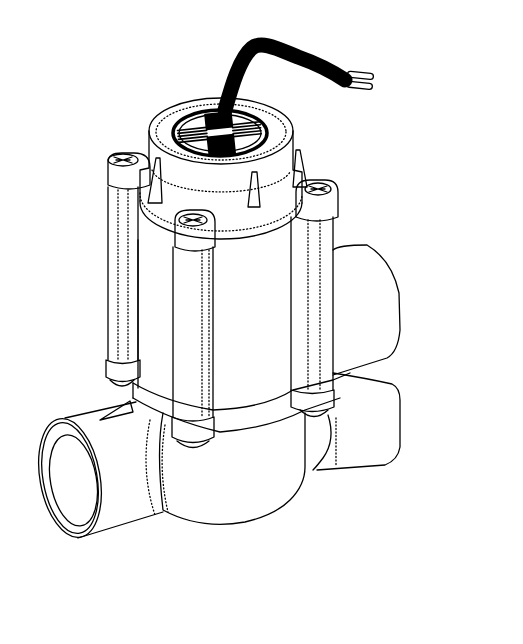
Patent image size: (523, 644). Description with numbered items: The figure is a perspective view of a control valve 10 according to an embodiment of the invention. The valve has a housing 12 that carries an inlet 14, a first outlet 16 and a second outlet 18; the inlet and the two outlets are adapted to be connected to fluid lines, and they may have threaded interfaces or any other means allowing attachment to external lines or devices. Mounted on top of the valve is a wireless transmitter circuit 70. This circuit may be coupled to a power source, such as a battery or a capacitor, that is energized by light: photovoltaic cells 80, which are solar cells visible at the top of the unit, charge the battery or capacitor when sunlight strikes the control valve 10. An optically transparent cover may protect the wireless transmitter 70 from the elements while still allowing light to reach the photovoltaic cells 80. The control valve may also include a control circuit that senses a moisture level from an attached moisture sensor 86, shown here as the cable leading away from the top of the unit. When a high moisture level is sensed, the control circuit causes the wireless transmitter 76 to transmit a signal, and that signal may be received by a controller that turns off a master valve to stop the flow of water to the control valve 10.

The control valve 10 is at (426, 163).
The housing 12 is at (107, 305).
The inlet 14 is at (70, 418).
The first outlet 16 is at (347, 243).
The second outlet 18 is at (373, 463).
The wireless transmitter circuit 70 is at (153, 93).
The wireless transmitter 76 is at (172, 131).
The photovoltaic cells 80 is at (250, 118).
The moisture sensor 86 is at (300, 54).